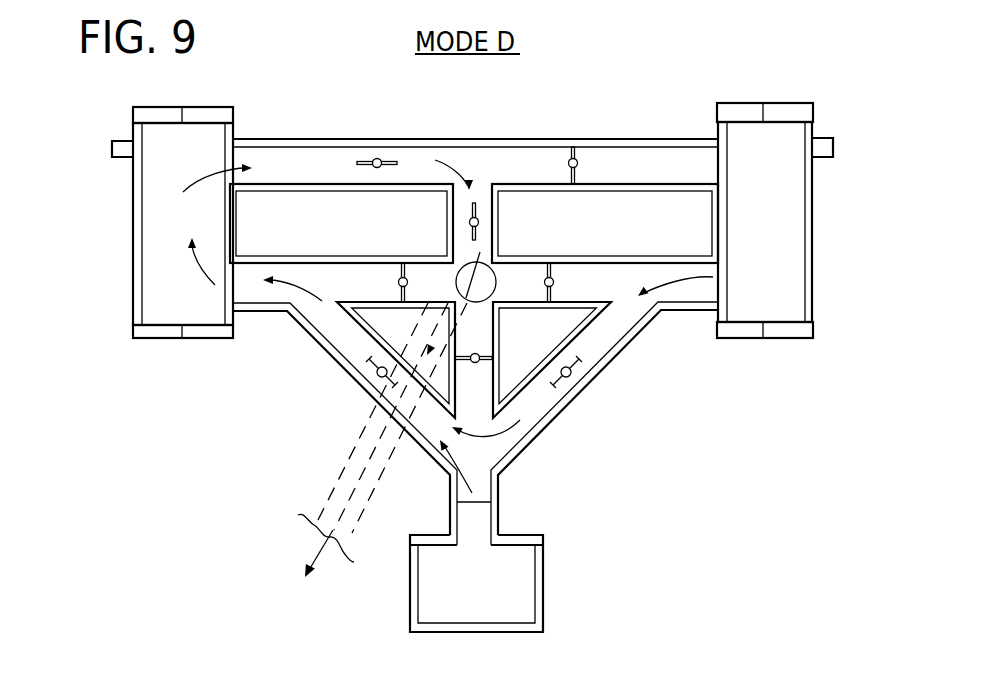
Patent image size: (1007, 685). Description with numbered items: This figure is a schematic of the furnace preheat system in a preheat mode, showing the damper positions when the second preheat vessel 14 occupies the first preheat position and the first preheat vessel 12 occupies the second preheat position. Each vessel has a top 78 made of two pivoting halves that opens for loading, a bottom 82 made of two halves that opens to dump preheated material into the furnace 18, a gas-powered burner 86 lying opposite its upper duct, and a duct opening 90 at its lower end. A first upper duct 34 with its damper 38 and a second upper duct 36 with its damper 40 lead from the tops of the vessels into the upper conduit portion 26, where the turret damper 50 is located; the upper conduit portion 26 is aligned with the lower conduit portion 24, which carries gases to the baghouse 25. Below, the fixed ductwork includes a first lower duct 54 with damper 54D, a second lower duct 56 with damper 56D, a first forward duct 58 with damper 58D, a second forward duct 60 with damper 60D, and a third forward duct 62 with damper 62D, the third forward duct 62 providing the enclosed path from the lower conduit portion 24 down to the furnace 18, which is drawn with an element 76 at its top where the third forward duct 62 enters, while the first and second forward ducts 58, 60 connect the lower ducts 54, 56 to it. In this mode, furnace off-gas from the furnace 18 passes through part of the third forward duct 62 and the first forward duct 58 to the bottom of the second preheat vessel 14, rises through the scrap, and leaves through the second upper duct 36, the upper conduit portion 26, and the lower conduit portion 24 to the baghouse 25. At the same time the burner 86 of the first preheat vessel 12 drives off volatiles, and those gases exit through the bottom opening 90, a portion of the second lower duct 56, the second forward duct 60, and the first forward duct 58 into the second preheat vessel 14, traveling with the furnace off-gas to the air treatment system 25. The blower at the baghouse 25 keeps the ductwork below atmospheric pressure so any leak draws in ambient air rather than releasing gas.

The first preheat vessel 12 is at (812, 250).
The second preheat vessel 14 is at (133, 253).
The furnace 18 is at (547, 593).
The lower conduit portion 24 is at (342, 473).
The bag house 25 is at (292, 586).
The upper conduit portion 26 is at (493, 212).
The first upper duct 34 is at (627, 138).
The second upper duct 36 is at (267, 139).
The damper 38 is at (567, 146).
The damper 40 is at (369, 158).
The turret damper 50 is at (471, 210).
The first lower duct 54 is at (307, 254).
The damper 54D is at (398, 278).
The second lower duct 56 is at (669, 256).
The damper 56D is at (555, 270).
The first forward duct 58 is at (313, 347).
The damper 58D is at (369, 368).
The second forward duct 60 is at (627, 346).
The damper 60D is at (583, 372).
The third forward duct 62 is at (500, 485).
The damper 62D is at (484, 357).
The hopper top plate 76 is at (547, 538).
The top 78 is at (194, 107).
The bottom 82 is at (162, 339).
The gas-powered burner 86 is at (122, 158).
The duct opening 90 is at (226, 296).